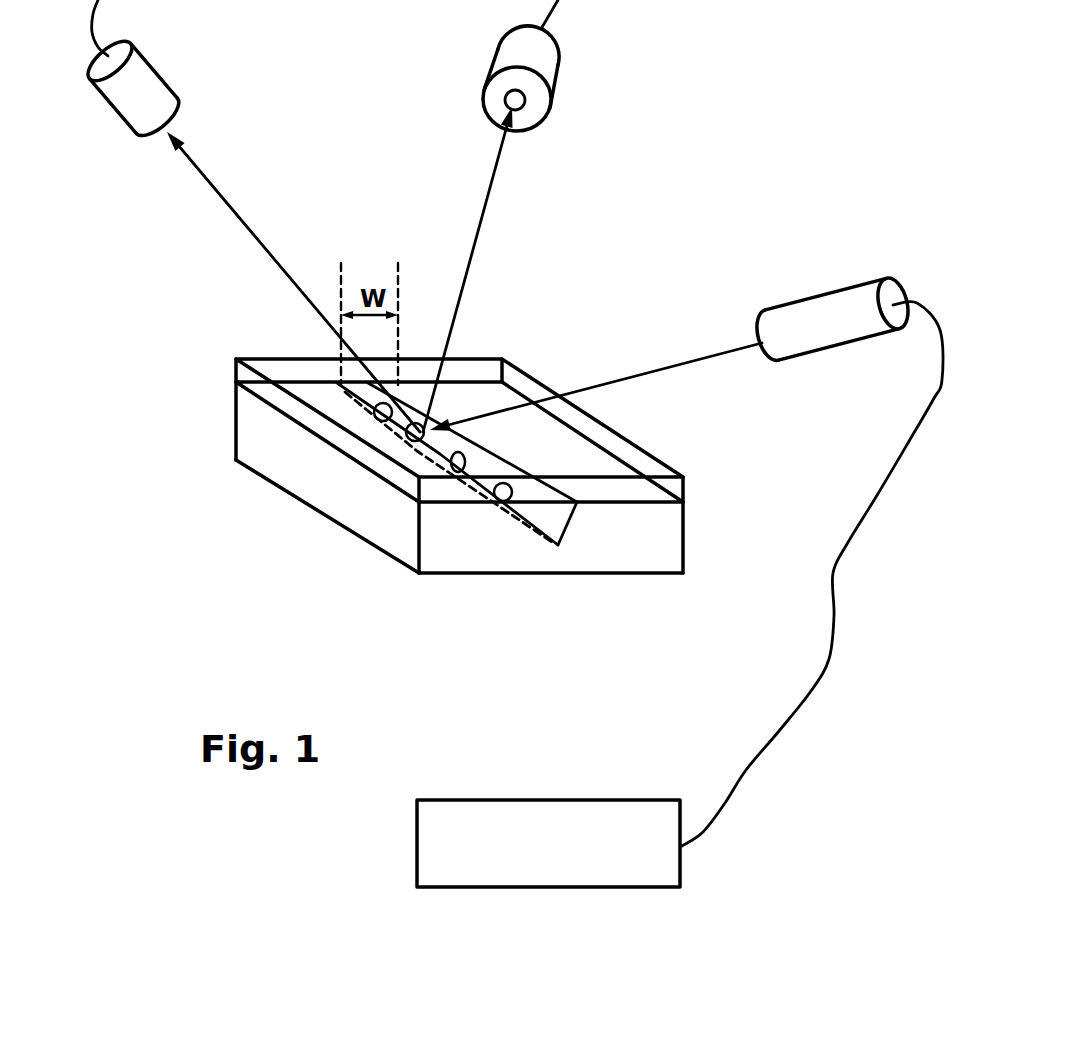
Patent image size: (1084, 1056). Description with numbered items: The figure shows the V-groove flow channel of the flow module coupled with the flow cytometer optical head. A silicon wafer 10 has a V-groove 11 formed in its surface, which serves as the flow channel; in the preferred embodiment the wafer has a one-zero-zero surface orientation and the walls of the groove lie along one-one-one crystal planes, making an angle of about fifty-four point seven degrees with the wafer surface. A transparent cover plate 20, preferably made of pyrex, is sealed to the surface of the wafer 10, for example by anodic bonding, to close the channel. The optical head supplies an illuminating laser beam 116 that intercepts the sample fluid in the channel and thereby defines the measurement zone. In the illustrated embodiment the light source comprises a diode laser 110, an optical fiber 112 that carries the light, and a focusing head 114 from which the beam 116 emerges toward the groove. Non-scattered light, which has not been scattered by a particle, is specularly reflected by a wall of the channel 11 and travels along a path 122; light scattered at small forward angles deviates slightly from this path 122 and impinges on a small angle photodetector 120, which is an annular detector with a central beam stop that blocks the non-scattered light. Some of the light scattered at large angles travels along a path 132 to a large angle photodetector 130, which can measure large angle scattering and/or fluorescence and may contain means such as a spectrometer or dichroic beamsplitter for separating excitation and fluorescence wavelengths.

The silicon wafer 10 is at (683, 547).
The V-groove 11 is at (570, 527).
The transparent cover plate 20 is at (683, 484).
The diode laser 110 is at (558, 800).
The optical fiber 112 is at (807, 691).
The focusing head 114 is at (815, 297).
The illuminating laser beam 116 is at (648, 372).
The small angle photodetector 120 is at (560, 85).
The path of non-scattered light 122 is at (484, 208).
The large angle photodetector 130 is at (163, 73).
The path of large angle scattered light 132 is at (218, 200).